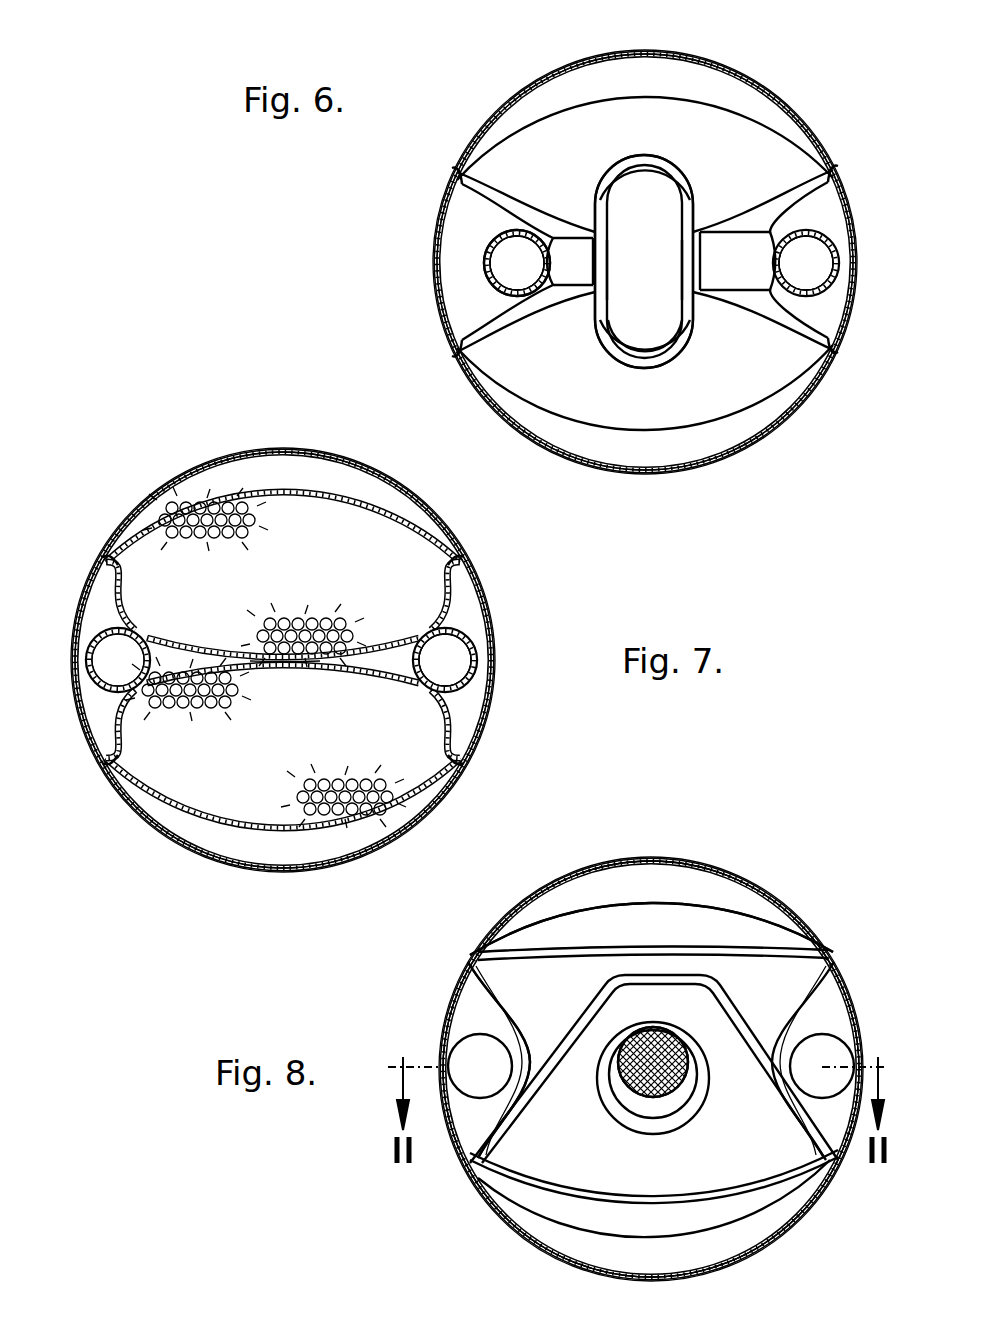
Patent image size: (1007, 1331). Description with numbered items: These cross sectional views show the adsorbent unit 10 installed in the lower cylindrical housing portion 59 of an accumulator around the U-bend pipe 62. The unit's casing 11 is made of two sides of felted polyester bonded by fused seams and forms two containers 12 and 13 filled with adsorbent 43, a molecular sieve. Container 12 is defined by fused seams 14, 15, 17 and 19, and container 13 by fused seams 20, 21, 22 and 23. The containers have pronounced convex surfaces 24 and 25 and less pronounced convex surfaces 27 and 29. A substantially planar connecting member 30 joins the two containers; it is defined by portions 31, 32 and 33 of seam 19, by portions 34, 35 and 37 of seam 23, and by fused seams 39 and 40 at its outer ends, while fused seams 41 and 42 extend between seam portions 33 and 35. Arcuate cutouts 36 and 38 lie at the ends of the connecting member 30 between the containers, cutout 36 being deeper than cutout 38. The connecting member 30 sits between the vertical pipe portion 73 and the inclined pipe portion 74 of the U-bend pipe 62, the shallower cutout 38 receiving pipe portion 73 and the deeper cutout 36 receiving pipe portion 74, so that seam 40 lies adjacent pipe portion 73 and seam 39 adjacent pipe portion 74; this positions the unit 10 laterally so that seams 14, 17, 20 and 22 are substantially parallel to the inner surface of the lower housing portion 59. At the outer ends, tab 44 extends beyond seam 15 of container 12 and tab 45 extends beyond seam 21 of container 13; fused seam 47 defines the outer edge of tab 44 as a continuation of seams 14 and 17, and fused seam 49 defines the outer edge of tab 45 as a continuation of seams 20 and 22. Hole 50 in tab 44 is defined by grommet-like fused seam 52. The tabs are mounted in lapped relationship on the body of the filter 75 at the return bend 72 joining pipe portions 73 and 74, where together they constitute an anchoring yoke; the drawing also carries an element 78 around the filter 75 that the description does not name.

In FIG. 6, the adsorbent unit 10 is at (742, 92).
In FIG. 8, the adsorbent unit 10 is at (716, 890).
In FIG. 6, the casing 11 is at (780, 120).
In FIG. 8, the casing 11 is at (752, 900).
In FIG. 6, the container 12 is at (545, 105).
In FIG. 7, the container 12 is at (340, 493).
In FIG. 8, the container 12 is at (570, 1215).
In FIG. 6, the container 13 is at (735, 400).
In FIG. 7, the container 13 is at (328, 830).
In FIG. 8, the container 13 is at (555, 905).
In FIG. 6, the fused seam 14 is at (822, 175).
In FIG. 7, the fused seam 14 is at (462, 562).
In FIG. 8, the fused seam 15 is at (670, 1205).
In FIG. 6, the fused seam 17 is at (455, 172).
In FIG. 7, the fused seam 17 is at (105, 562).
In FIG. 6, the fused seam 19 is at (672, 160).
In FIG. 6, the fused seam 20 is at (833, 345).
In FIG. 7, the fused seam 20 is at (465, 755).
In FIG. 8, the fused seam 21 is at (673, 947).
In FIG. 6, the fused seam 22 is at (455, 352).
In FIG. 7, the fused seam 22 is at (103, 758).
In FIG. 6, the fused seam 23 is at (615, 360).
In FIG. 7, the pronounced convex surface 24 is at (390, 665).
In FIG. 7, the pronounced convex surface 25 is at (185, 640).
In FIG. 6, the less pronounced convex surface 27 is at (616, 98).
In FIG. 7, the less pronounced convex surface 27 is at (237, 468).
In FIG. 8, the less pronounced convex surface 27 is at (730, 1210).
In FIG. 6, the less pronounced convex surface 29 is at (605, 420).
In FIG. 7, the less pronounced convex surface 29 is at (235, 855).
In FIG. 8, the less pronounced convex surface 29 is at (617, 903).
In FIG. 6, the connecting member 30 is at (644, 261).
In FIG. 6, the seam portion 31 is at (548, 215).
In FIG. 6, the seam portion 32 is at (745, 222).
In FIG. 6, the seam portion 33 is at (642, 155).
In FIG. 6, the seam portion 34 is at (540, 290).
In FIG. 6, the seam portion 35 is at (645, 368).
In FIG. 6, the arcuate cutout 36 is at (835, 245).
In FIG. 8, the arcuate cutout 36 is at (830, 1025).
In FIG. 6, the seam portion 37 is at (720, 300).
In FIG. 6, the arcuate cutout 38 is at (490, 235).
In FIG. 8, the arcuate cutout 38 is at (475, 1010).
In FIG. 6, the fused seam 39 is at (573, 288).
In FIG. 6, the fused seam 40 is at (740, 275).
In FIG. 6, the fused seam 41 is at (672, 285).
In FIG. 6, the fused seam 42 is at (618, 300).
In FIG. 7, the adsorbent 43 is at (300, 613).
In FIG. 8, the tab 44 is at (590, 1015).
In FIG. 8, the tab 45 is at (490, 975).
In FIG. 8, the fused seam 47 is at (628, 980).
In FIG. 8, the fused seam 49 is at (505, 1056).
In FIG. 8, the hole 50 is at (650, 1122).
In FIG. 8, the grommet-like fused seam 52 is at (609, 1108).
In FIG. 6, the lower cylindrical housing portion 59 is at (480, 258).
In FIG. 7, the lower cylindrical housing portion 59 is at (292, 455).
In FIG. 8, the lower cylindrical housing portion 59 is at (665, 860).
In FIG. 6, the U-bend pipe 62 is at (487, 275).
In FIG. 7, the U-bend pipe 62 is at (480, 640).
In FIG. 8, the U-bend pipe 62 is at (470, 1010).
In FIG. 8, the return bend 72 is at (470, 1128).
In FIG. 6, the vertical pipe portion 73 is at (835, 272).
In FIG. 7, the vertical pipe portion 73 is at (472, 672).
In FIG. 6, the inclined pipe portion 74 is at (490, 290).
In FIG. 7, the inclined pipe portion 74 is at (92, 640).
In FIG. 8, the filter 75 is at (668, 1030).
In FIG. 8, the core ring 78 is at (700, 1070).